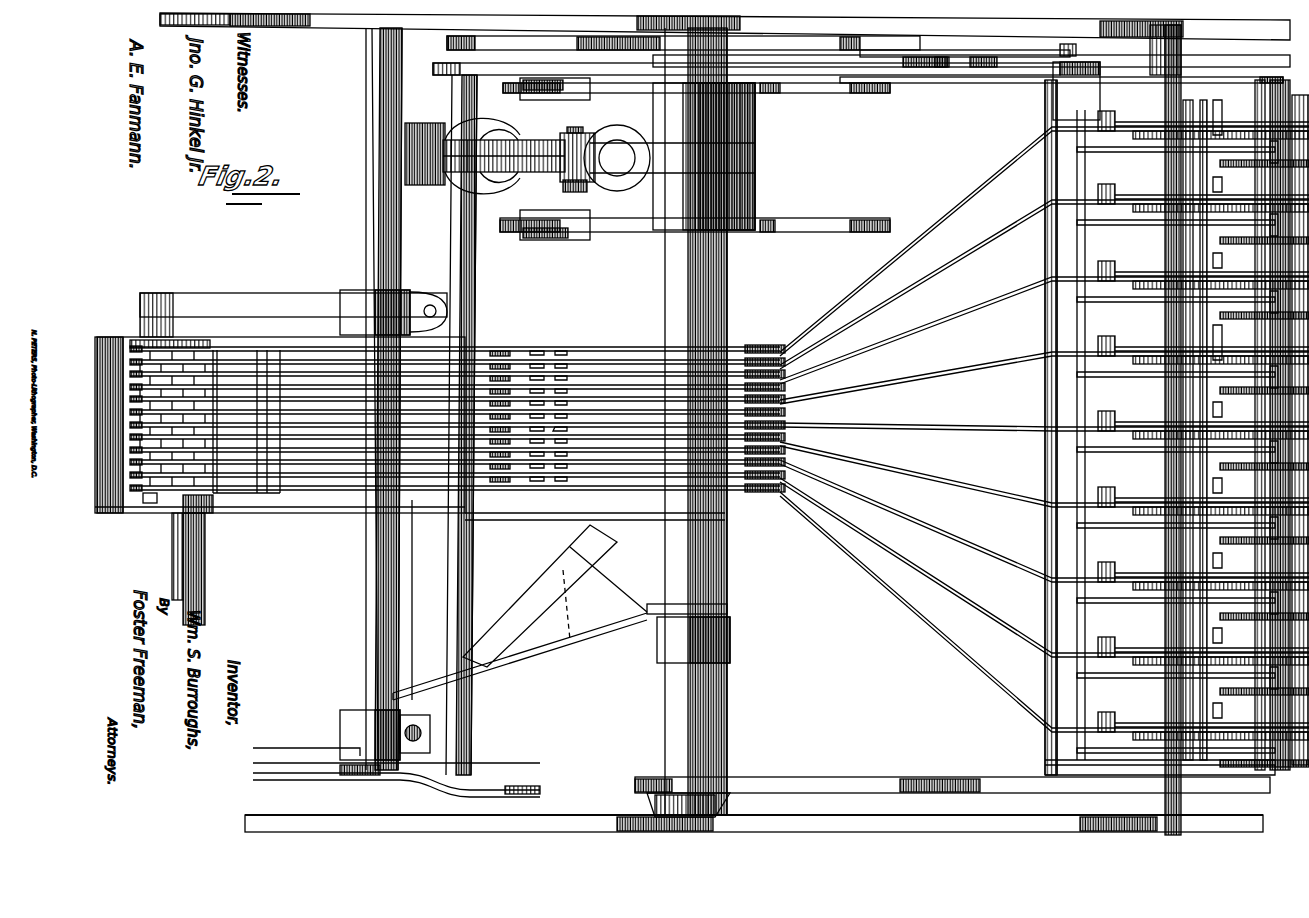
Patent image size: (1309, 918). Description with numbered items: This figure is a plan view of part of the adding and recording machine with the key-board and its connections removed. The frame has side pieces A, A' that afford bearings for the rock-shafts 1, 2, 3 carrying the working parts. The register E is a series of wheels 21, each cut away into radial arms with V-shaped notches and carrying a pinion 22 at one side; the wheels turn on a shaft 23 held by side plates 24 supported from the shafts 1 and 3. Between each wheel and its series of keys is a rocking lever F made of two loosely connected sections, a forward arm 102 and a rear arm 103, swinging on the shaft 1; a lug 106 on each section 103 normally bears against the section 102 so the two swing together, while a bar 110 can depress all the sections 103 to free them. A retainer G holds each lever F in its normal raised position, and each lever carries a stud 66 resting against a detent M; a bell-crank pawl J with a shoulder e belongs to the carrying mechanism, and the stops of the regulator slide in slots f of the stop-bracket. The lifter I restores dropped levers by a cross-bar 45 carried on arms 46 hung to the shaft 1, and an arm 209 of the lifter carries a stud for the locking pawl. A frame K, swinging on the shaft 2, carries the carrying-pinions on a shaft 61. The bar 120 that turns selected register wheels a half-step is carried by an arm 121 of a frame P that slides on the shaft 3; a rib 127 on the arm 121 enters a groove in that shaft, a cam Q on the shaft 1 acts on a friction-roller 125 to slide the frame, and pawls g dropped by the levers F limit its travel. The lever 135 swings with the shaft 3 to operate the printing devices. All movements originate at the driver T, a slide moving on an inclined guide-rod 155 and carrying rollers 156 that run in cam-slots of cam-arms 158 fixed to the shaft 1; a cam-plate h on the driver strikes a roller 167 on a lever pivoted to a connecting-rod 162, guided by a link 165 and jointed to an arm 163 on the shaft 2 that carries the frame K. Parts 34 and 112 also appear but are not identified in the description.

The rock-shaft 1 is at (720, 580).
The rock-shaft 2 is at (1090, 47).
The rock-shaft 3 is at (372, 585).
The register wheel 21 is at (205, 345).
The pinion 22 is at (175, 350).
The shaft 23 is at (205, 575).
The side plates 24 is at (530, 347).
The posts 34 is at (1232, 330).
The cross-bar 45 is at (1075, 752).
The arms 46 is at (877, 765).
The shaft 61 is at (1183, 50).
The stud or bearing 66 is at (1112, 475).
The forward lever section 102 is at (900, 630).
The rear lever section 103 is at (312, 480).
The lug 106 is at (505, 345).
The bar 110 is at (477, 275).
The right frame 112 is at (1278, 100).
The bar 120 is at (140, 320).
The arm 121 is at (340, 526).
The friction-roller 125 is at (340, 735).
The rib 127 is at (410, 290).
The lever 135 is at (390, 790).
The inclined guide-rod 155 is at (504, 156).
The rollers 156 is at (555, 164).
The cam-arms 158 is at (826, 226).
The connecting-rod 162 is at (970, 57).
The arm 163 is at (1058, 80).
The link 165 is at (971, 64).
The roller 167 is at (775, 30).
The arm of the lifter 209 is at (805, 800).
The side piece A is at (754, 804).
The side piece A' is at (725, 32).
The register E is at (410, 442).
The rocking lever F is at (985, 580).
The retainer G is at (1228, 580).
The lifter I is at (1030, 530).
The bell-crank lever or pawl J is at (1174, 430).
The frame K is at (1235, 70).
The detent M is at (1221, 435).
The frame P is at (475, 578).
The cam Q is at (562, 605).
The driver T is at (462, 155).
The shoulder e is at (688, 633).
The slots f is at (1148, 540).
The pawl g is at (370, 480).
The cam-plate h is at (590, 63).